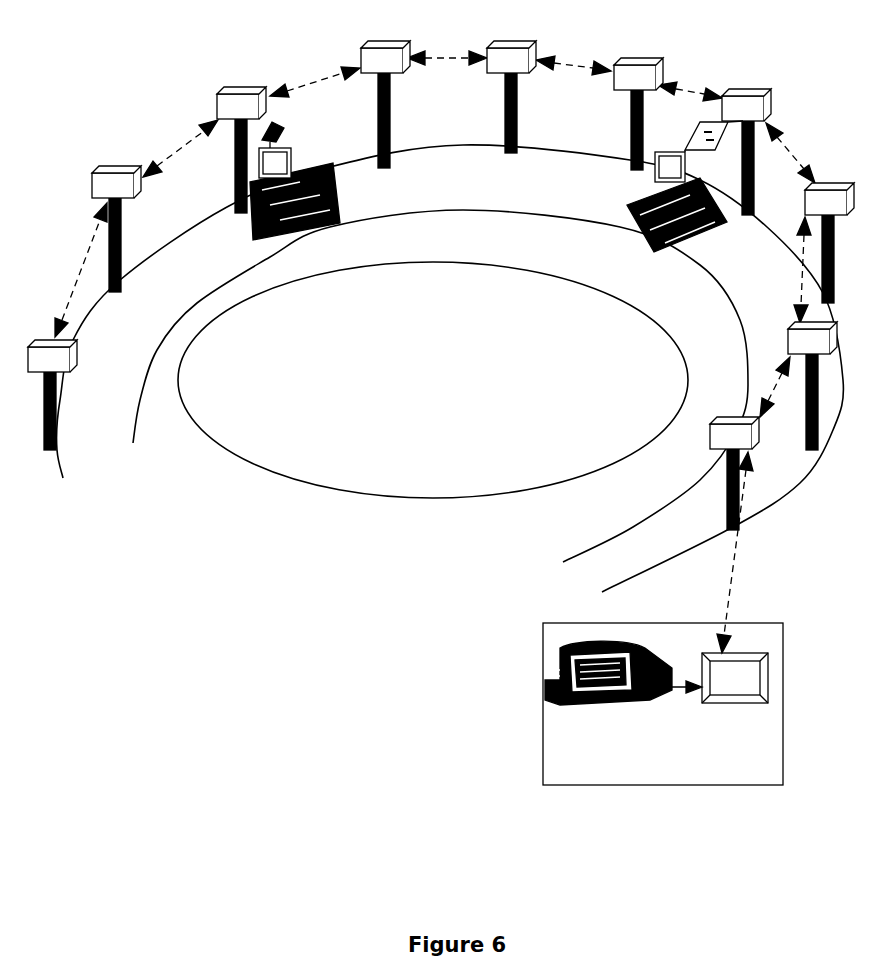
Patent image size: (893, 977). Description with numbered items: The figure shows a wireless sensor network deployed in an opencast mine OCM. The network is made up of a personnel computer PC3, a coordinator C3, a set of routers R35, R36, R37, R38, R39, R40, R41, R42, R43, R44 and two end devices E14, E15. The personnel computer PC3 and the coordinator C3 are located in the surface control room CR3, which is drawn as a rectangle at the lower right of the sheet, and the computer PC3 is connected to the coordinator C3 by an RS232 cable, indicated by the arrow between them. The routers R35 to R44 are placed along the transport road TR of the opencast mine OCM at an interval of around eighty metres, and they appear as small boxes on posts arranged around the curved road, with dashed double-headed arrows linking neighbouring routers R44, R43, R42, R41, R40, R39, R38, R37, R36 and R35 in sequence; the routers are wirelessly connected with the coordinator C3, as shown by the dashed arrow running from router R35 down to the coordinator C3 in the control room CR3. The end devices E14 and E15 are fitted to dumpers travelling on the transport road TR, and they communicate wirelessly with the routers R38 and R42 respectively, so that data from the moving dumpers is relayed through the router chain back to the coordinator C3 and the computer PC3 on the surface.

The router R35 is at (734, 473).
The router R36 is at (812, 386).
The router R37 is at (829, 243).
The router R38 is at (746, 152).
The router R39 is at (638, 114).
The router R40 is at (511, 97).
The router R41 is at (385, 104).
The router R42 is at (241, 150).
The router R43 is at (116, 229).
The router R44 is at (52, 395).
The end device E14 is at (685, 186).
The end device E15 is at (295, 181).
The transport road TR is at (450, 368).
The opencast mine OCM is at (433, 380).
The personnel computer PC3 is at (623, 688).
The coordinator C3 is at (735, 678).
The surface control room CR3 is at (663, 704).